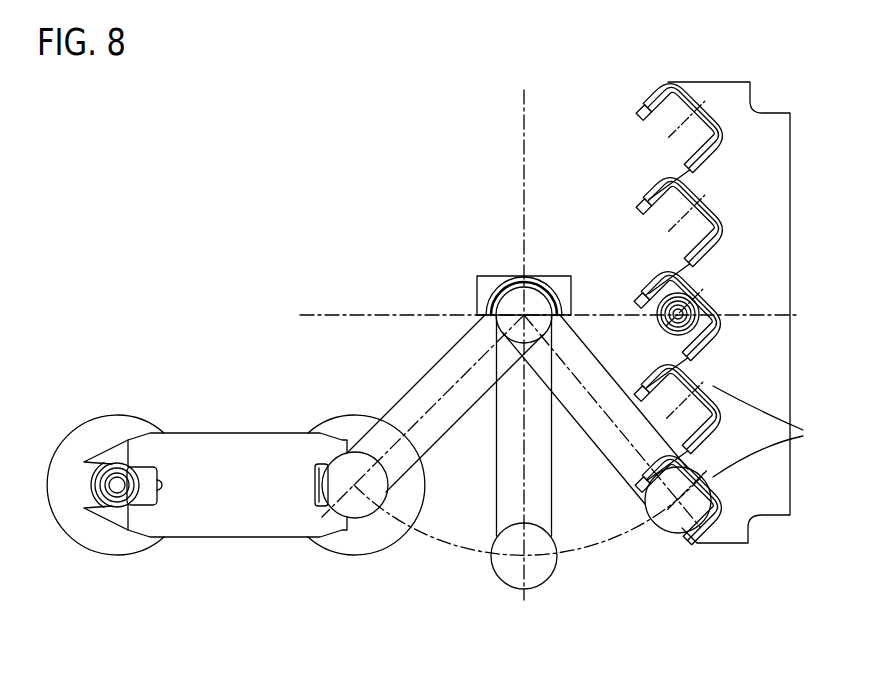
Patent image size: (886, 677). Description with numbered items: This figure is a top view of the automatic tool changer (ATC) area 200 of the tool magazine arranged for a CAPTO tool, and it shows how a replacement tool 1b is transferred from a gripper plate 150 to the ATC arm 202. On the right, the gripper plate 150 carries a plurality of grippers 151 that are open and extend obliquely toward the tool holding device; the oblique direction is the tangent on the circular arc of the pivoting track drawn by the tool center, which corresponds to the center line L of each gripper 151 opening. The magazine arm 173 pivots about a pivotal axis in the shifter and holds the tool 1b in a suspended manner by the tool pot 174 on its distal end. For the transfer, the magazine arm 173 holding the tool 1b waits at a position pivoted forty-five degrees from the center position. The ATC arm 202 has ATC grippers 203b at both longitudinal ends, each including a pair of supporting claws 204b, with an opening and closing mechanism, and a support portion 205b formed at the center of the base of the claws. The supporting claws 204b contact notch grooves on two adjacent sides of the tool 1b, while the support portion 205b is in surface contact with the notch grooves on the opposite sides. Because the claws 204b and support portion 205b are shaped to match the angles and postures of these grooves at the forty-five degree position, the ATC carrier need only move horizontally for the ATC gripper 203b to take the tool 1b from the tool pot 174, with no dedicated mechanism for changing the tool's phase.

The automatic tool changer (ATC) area 200 is at (188, 446).
The ATC arm 202 is at (220, 453).
The ATC gripper 203b is at (138, 515).
The supporting claws 204b is at (108, 458).
The support portion 205b is at (148, 470).
The replacement tool 1b is at (358, 550).
The magazine arm 173 is at (430, 382).
The tool pot 174 is at (538, 570).
The gripper plate 150 is at (770, 193).
The gripper 151 is at (668, 230).
The center line of the gripper opening L is at (764, 431).